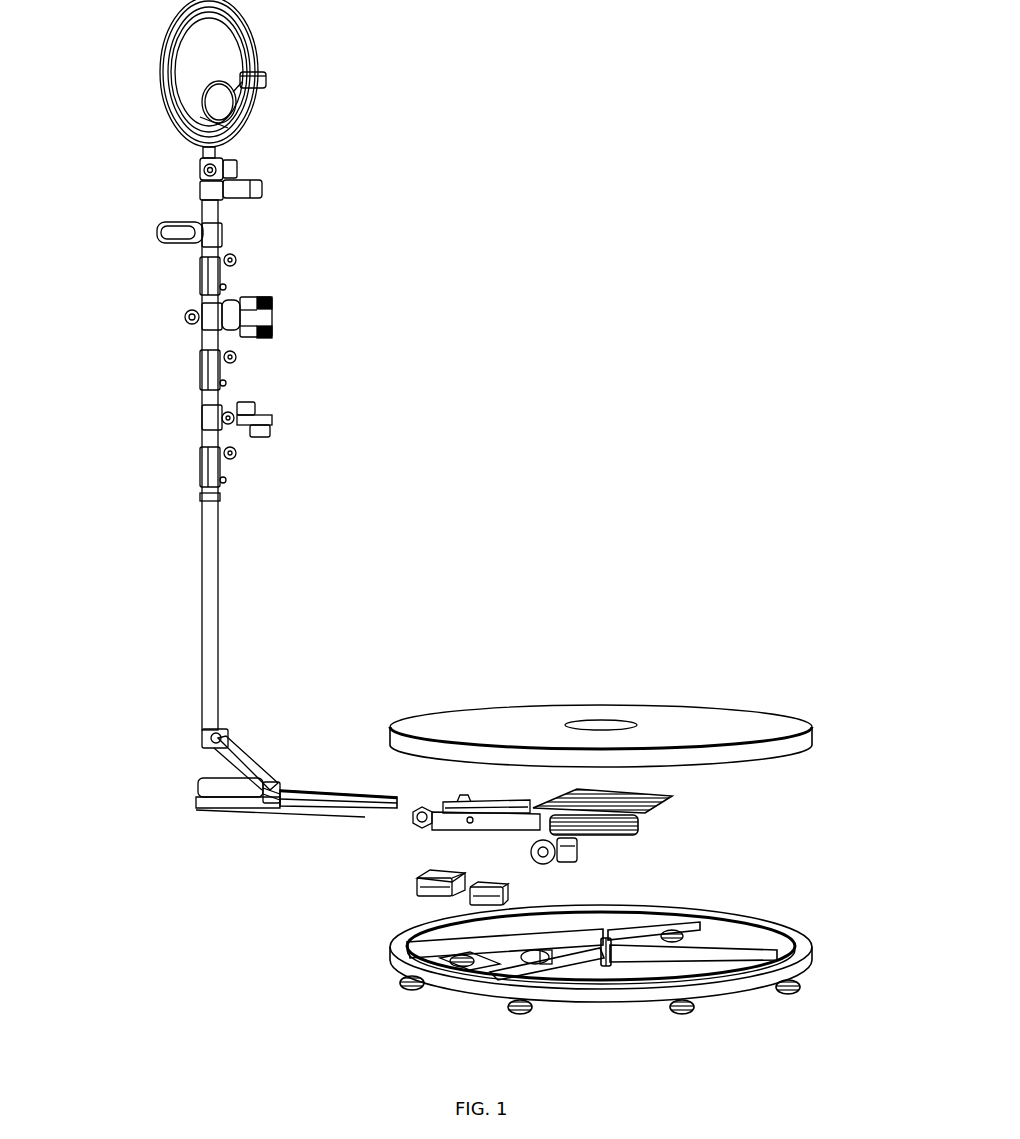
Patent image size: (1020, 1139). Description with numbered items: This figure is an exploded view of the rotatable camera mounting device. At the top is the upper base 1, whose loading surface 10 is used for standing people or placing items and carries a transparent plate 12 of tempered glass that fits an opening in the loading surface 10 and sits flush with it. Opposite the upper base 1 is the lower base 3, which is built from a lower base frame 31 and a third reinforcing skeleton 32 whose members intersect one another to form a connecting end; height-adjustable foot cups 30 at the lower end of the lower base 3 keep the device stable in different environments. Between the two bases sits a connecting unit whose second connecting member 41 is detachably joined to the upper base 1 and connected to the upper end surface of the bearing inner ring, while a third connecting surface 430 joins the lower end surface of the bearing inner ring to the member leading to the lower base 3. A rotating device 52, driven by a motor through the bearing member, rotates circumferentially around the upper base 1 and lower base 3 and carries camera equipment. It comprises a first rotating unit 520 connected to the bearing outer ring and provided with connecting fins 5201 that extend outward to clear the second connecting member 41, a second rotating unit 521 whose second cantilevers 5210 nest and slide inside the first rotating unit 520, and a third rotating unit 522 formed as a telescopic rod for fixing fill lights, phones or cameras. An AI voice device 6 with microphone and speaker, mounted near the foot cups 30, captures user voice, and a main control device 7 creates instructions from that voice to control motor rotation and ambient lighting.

The upper base 1 is at (730, 706).
The loading surface 10 is at (510, 737).
The transparent plate 12 is at (587, 722).
The lower base 3 is at (447, 1000).
The foot cups 30 is at (800, 993).
The lower base frame 31 is at (395, 965).
The third reinforcing skeleton 32 is at (700, 1007).
The third connecting surface 430 is at (480, 903).
The main control device 7 is at (637, 912).
The AI voice device 6 is at (420, 902).
The second connecting member 41 is at (673, 797).
The rotating device 52 is at (683, 293).
The first rotating unit 520 is at (408, 805).
The connecting fins 5201 is at (654, 769).
The second rotating unit 521 is at (288, 822).
The second cantilevers 5210 is at (296, 797).
The third rotating unit 522 is at (203, 592).